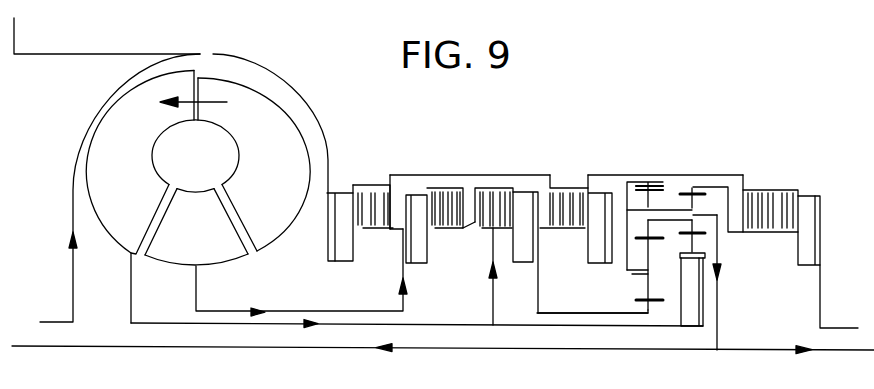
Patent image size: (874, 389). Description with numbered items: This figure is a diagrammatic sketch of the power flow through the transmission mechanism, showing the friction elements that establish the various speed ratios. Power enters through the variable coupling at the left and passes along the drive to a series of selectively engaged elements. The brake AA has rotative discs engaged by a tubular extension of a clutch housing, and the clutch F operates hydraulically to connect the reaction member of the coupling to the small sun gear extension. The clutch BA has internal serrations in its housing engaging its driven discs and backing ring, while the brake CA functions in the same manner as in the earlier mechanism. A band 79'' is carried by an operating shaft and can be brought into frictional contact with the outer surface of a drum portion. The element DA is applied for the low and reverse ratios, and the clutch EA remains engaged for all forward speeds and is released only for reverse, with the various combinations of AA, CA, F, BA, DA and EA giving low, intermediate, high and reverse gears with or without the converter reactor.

The brake AA is at (375, 185).
The clutch F is at (447, 185).
The clutch BA is at (495, 185).
The brake CA is at (568, 185).
The clutch EA is at (700, 253).
The brake/clutch element DA is at (768, 190).
The band 79'' is at (615, 233).